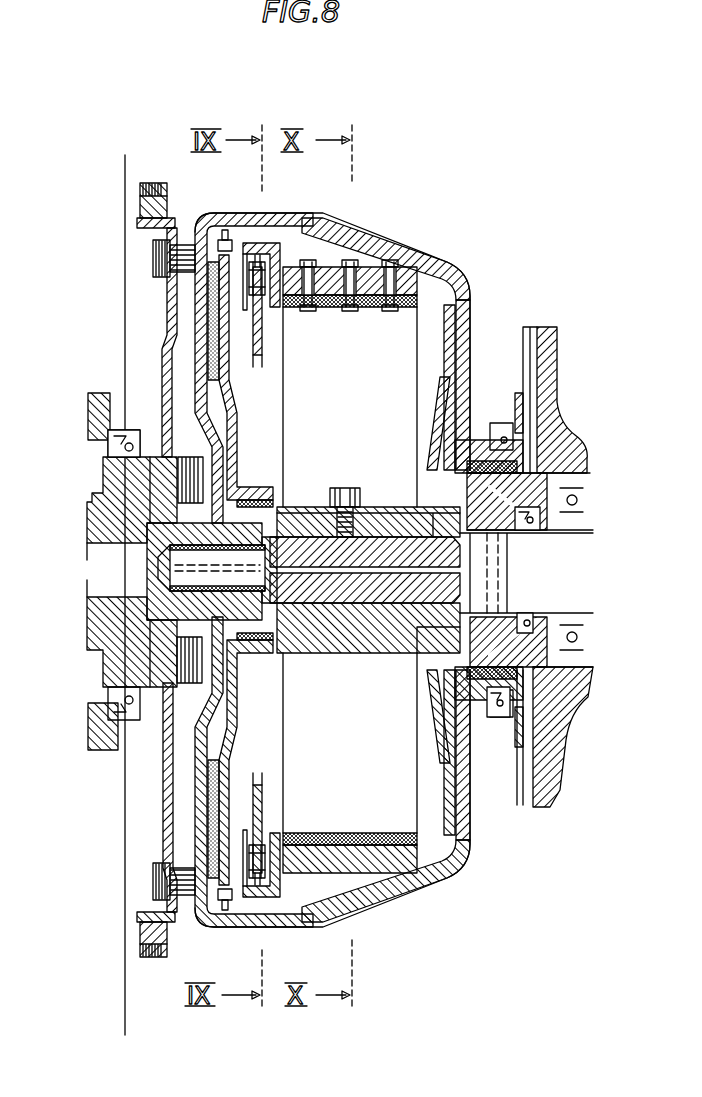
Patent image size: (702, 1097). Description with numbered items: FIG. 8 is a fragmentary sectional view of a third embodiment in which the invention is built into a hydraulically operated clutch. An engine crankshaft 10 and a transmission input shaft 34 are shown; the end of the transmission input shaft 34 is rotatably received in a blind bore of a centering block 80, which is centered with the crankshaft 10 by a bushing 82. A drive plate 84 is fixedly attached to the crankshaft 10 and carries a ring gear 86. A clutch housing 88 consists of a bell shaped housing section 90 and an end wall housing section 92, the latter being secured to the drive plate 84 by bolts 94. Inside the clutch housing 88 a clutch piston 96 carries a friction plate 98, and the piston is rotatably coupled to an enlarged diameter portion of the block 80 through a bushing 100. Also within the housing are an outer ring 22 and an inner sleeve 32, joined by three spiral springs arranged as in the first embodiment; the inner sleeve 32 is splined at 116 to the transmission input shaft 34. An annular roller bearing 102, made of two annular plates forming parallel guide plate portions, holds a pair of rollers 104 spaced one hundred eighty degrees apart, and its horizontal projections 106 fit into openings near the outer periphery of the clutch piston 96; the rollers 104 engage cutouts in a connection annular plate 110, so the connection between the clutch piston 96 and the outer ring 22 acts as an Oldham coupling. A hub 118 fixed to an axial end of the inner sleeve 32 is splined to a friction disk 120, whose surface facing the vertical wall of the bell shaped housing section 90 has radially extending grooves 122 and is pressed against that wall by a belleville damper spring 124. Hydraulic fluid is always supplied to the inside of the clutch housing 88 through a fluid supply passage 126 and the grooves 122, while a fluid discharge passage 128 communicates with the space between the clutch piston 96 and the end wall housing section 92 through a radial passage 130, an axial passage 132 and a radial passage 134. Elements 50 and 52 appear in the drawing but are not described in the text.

The engine crankshaft 10 is at (110, 517).
The outer ring 22 is at (370, 273).
The inner sleeve 32 is at (387, 505).
The transmission input shaft 34 is at (559, 587).
The bolts 50 is at (390, 312).
The bolt 52 is at (345, 490).
The centering block 80 is at (150, 560).
The bushing 82 is at (165, 583).
The drive plate 84 is at (167, 303).
The ring gear 86 is at (140, 210).
The clutch housing 88 is at (378, 220).
The bell shaped housing section 90 is at (444, 263).
The end wall housing section 92 is at (232, 216).
The bolts 94 is at (153, 257).
The clutch piston 96 is at (237, 412).
The friction plate 98 is at (217, 340).
The bushing 100 is at (258, 494).
The annular roller bearing 102 is at (262, 243).
The rollers 104 is at (343, 221).
The horizontal projections 106 is at (218, 240).
The connection annular plate 110 is at (263, 338).
The spline 116 is at (380, 606).
The hub 118 is at (450, 638).
The friction disk 120 is at (453, 353).
The radially extending grooves 122 is at (457, 718).
The belleville damper spring 124 is at (437, 440).
The fluid supply passage 126 is at (535, 412).
The fluid discharge passage 128 is at (530, 758).
The radial passage 130 is at (500, 553).
The axial passage 132 is at (333, 577).
The radial passage 134 is at (277, 608).